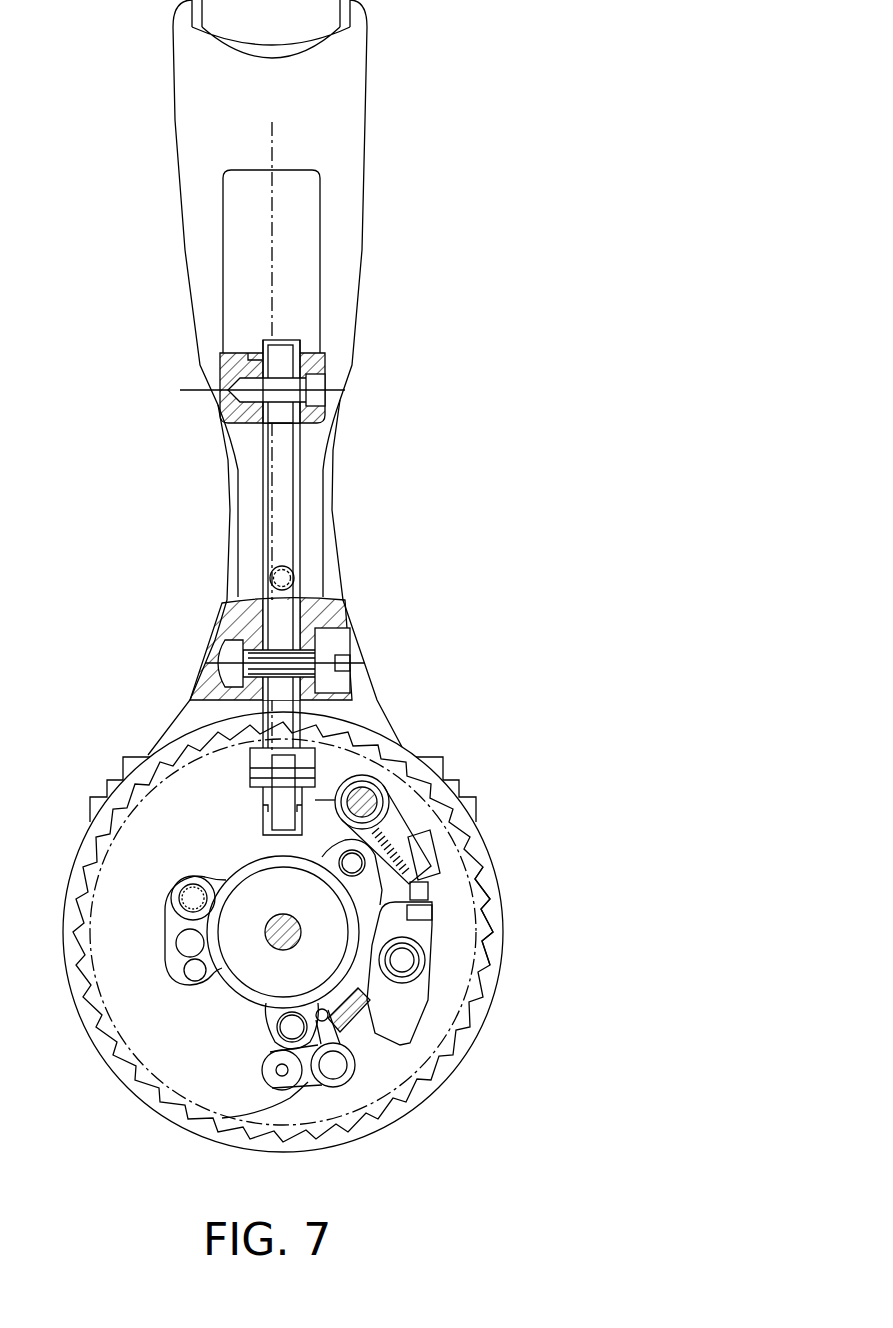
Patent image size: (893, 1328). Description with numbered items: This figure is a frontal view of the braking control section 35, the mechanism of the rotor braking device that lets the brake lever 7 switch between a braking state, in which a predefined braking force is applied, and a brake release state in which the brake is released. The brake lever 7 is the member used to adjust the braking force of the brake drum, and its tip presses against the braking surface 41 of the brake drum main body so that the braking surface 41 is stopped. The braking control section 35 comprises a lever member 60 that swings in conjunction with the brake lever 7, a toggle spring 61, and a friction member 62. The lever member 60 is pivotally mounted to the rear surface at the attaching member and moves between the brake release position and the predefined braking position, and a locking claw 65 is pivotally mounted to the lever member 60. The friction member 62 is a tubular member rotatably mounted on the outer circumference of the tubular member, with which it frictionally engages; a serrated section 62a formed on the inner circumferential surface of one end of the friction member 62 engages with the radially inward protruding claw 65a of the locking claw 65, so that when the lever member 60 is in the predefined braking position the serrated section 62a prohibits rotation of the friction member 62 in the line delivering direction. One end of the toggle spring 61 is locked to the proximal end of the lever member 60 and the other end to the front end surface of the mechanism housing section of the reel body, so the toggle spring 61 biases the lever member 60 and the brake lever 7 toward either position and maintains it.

The brake lever 7 is at (303, 480).
The braking surface 41 is at (388, 740).
The braking control section 35 is at (448, 987).
The lever member 60 is at (402, 818).
The toggle spring 61 is at (222, 1118).
The friction member 62 is at (440, 1095).
The serrated section 62a is at (482, 905).
The locking claw 65 is at (413, 1010).
The claw 65a is at (398, 1040).